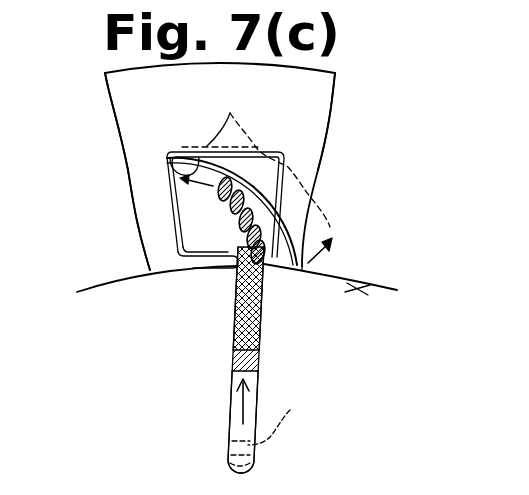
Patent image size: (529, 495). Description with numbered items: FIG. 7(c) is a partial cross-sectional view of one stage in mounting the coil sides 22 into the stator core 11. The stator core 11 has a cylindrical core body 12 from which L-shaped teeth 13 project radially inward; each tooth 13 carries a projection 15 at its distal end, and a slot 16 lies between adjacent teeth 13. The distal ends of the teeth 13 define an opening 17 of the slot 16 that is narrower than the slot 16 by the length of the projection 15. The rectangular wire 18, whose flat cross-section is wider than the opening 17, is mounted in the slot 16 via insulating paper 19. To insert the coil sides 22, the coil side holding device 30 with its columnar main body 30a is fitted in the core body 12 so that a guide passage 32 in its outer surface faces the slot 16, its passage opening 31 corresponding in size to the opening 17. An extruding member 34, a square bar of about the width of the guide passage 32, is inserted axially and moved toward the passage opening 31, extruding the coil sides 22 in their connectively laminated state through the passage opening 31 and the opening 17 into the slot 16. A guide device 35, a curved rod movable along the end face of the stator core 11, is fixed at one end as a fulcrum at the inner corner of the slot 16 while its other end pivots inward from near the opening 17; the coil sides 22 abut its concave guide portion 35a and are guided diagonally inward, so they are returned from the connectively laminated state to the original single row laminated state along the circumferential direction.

The stator core 11 is at (310, 100).
The core body 12 is at (312, 143).
The teeth 13 is at (143, 173).
The projection 15 is at (207, 268).
The slot 16 is at (203, 232).
The opening 17 is at (302, 270).
The rectangular wire 18 is at (264, 290).
The insulating paper 19 is at (168, 205).
The coil sides 22 is at (260, 320).
The coil side holding device 30 is at (364, 283).
The main body 30a is at (360, 234).
The passage opening 31 is at (237, 277).
The guide passage 32 is at (230, 417).
The extruding member 34 is at (257, 370).
The guide device 35 is at (242, 178).
The guide portion 35a is at (166, 157).